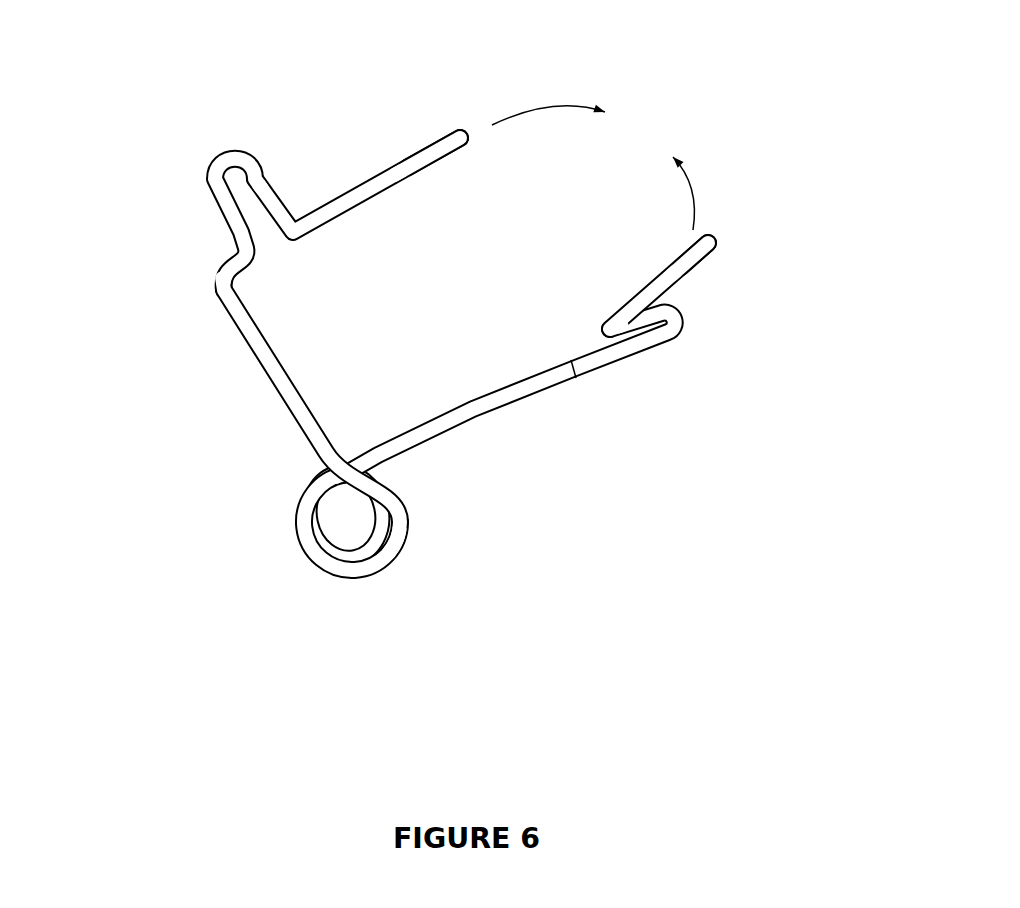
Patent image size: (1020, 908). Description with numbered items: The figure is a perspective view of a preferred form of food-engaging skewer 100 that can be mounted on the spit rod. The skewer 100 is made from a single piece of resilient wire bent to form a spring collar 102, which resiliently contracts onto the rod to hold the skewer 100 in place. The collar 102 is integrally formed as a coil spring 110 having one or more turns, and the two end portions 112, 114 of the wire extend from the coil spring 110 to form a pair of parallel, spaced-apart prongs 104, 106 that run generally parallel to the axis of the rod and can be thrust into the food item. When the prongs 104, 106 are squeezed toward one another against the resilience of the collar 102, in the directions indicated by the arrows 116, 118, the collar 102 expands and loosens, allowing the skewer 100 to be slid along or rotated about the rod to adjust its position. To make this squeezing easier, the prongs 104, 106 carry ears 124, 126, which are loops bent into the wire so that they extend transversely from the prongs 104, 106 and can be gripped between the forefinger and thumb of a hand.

The skewer 100 is at (485, 341).
The spring collar 102 is at (390, 590).
The prong 104 is at (697, 288).
The prong 106 is at (352, 170).
The coil spring 110 is at (328, 553).
The end portion of the wire 112 is at (718, 245).
The end portion of the wire 114 is at (447, 142).
The arrow 116 is at (692, 192).
The arrow 118 is at (558, 107).
The ear 124 is at (691, 340).
The ear 126 is at (199, 154).